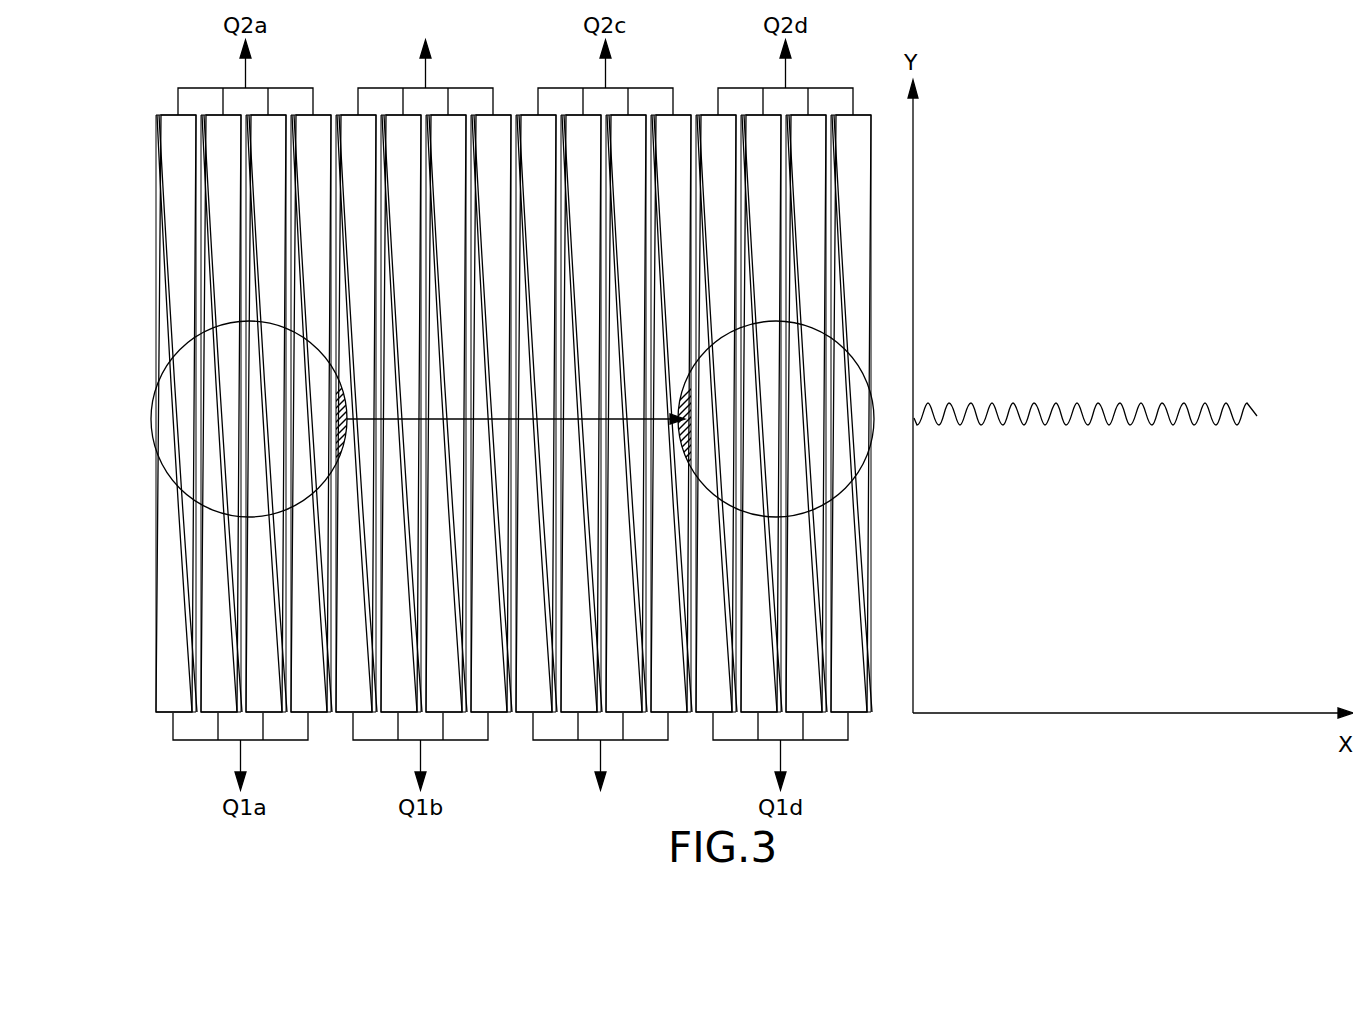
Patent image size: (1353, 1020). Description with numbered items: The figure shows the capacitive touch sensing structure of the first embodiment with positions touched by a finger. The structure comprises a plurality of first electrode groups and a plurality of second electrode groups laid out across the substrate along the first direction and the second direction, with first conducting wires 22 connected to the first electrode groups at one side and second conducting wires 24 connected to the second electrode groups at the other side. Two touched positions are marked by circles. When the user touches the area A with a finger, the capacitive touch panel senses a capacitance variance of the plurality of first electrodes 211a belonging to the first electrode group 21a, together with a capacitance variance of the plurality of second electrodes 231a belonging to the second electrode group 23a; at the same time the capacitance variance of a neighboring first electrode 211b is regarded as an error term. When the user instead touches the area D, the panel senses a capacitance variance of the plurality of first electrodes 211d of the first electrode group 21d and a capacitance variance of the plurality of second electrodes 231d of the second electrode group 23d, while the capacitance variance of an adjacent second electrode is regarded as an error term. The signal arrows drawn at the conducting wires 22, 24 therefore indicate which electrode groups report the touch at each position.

The first electrode group 21a is at (160, 598).
The second electrode group 23a is at (178, 216).
The first electrodes 211a is at (210, 640).
The second electrodes 231a is at (225, 168).
The first electrode 211b is at (348, 698).
The first electrode group 21d is at (845, 625).
The second electrode group 23d is at (855, 215).
The first electrodes 211d is at (808, 660).
The second electrodes 231d is at (808, 175).
The second conducting wires 24 is at (246, 70).
The first conducting wires 22 is at (240, 758).
The touched area A is at (152, 418).
The touched area D is at (868, 468).